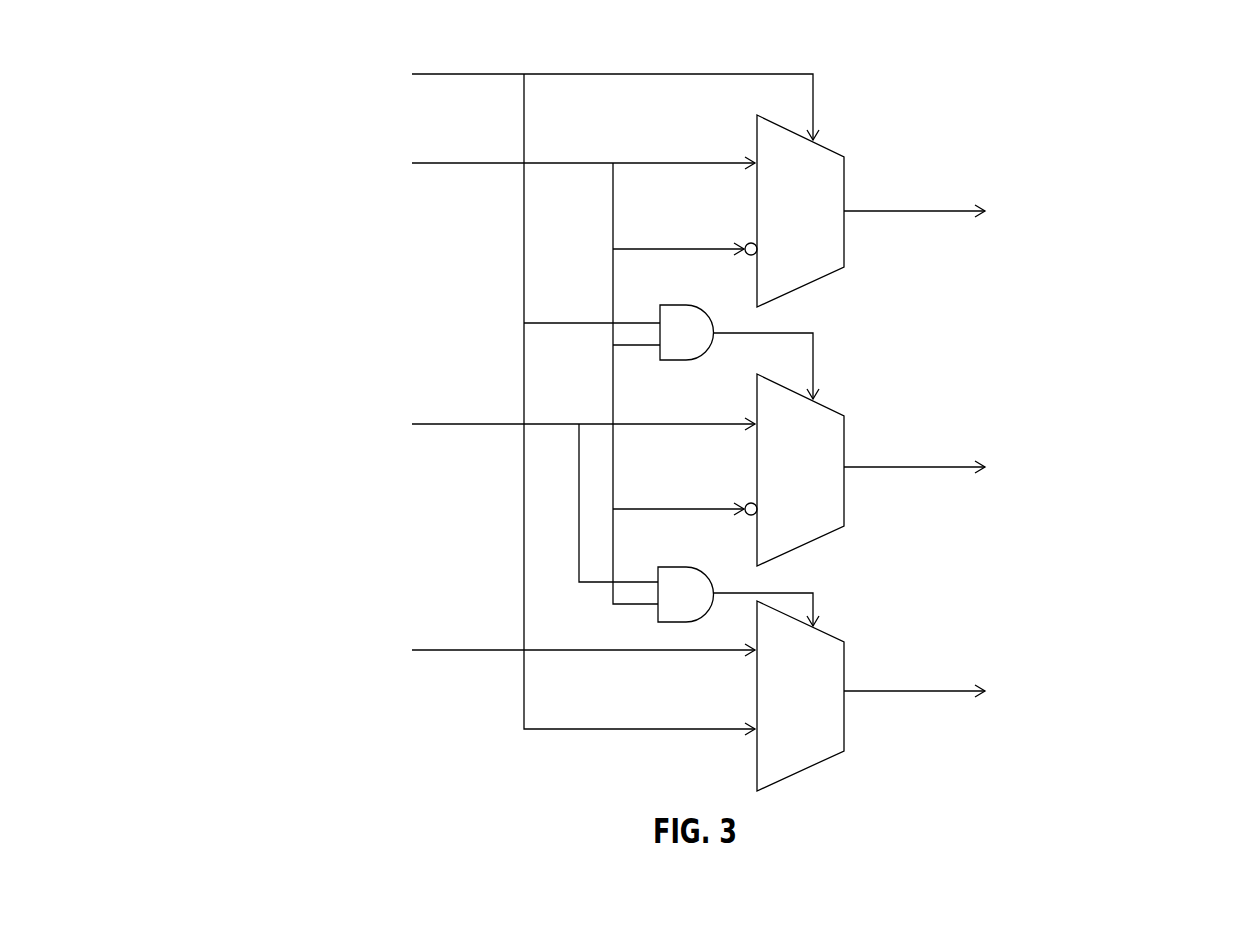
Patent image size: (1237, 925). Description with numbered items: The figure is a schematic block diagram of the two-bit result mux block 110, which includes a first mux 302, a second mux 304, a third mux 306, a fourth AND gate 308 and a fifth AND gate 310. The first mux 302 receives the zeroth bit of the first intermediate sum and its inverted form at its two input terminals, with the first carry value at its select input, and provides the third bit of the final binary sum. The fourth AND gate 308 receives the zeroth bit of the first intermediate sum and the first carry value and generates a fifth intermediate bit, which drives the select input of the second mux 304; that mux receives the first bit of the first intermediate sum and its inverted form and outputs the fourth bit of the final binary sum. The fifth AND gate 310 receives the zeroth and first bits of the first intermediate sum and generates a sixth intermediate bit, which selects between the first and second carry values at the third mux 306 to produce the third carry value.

The two-bit result mux block 110 is at (1153, 77).
The first mux 302 is at (833, 147).
The second mux 304 is at (827, 408).
The third mux 306 is at (827, 630).
The fourth AND gate 308 is at (680, 304).
The fifth AND gate 310 is at (675, 566).